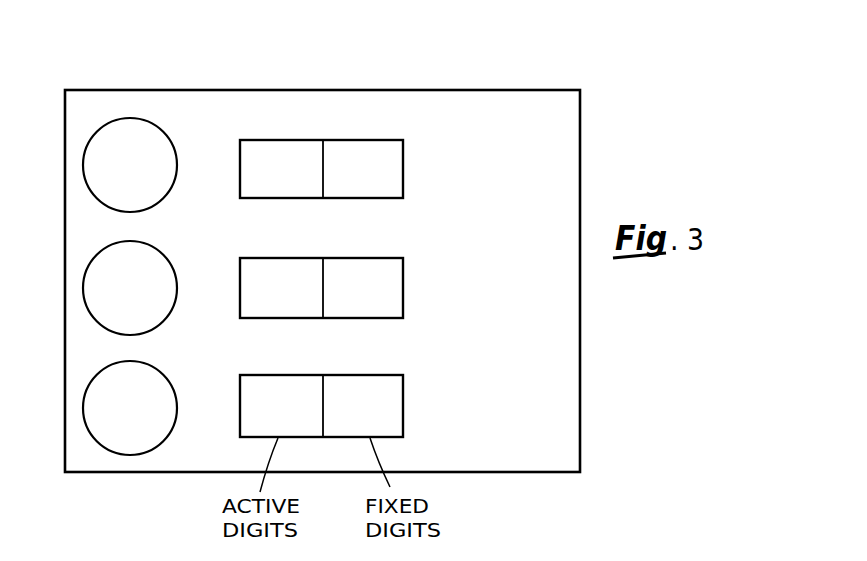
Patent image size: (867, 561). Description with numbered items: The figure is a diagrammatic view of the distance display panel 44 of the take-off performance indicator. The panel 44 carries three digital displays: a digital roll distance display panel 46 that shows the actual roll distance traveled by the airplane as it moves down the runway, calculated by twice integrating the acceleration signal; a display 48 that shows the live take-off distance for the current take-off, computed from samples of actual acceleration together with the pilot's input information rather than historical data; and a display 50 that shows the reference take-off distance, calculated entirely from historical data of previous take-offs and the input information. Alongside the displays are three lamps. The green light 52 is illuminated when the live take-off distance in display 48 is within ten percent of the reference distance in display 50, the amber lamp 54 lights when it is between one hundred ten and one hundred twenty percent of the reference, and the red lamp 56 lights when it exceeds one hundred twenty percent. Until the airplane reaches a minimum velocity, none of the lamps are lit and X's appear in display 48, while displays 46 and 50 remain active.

The distance display panel 44 is at (137, 63).
The digital roll distance display panel 46 is at (258, 139).
The live take-off distance display 48 is at (258, 257).
The reference take-off distance display 50 is at (258, 374).
The green light 52 is at (118, 121).
The amber lamp 54 is at (121, 240).
The red lamp 56 is at (128, 362).